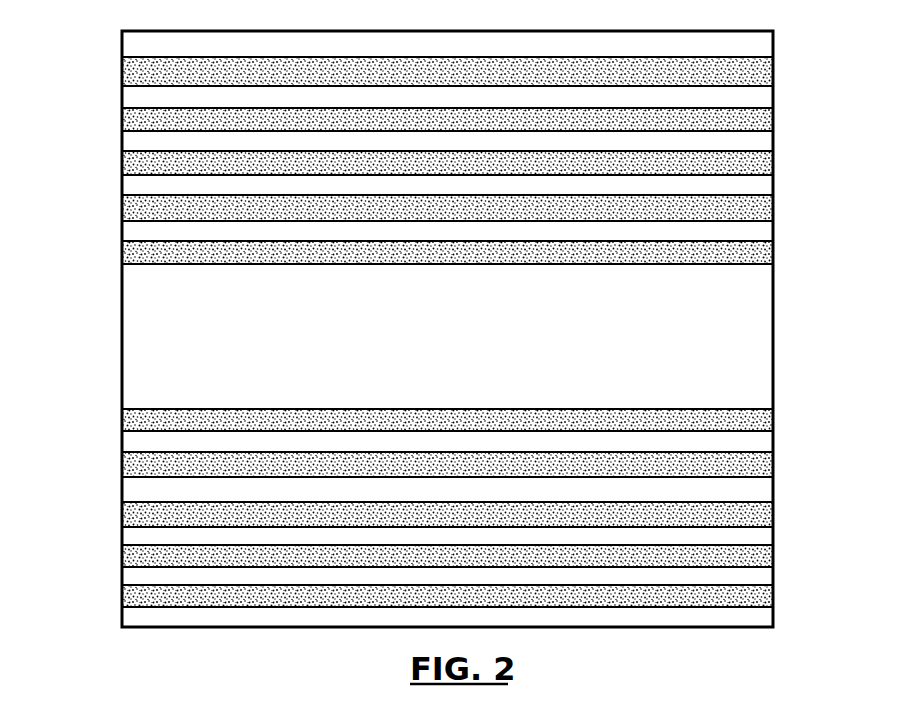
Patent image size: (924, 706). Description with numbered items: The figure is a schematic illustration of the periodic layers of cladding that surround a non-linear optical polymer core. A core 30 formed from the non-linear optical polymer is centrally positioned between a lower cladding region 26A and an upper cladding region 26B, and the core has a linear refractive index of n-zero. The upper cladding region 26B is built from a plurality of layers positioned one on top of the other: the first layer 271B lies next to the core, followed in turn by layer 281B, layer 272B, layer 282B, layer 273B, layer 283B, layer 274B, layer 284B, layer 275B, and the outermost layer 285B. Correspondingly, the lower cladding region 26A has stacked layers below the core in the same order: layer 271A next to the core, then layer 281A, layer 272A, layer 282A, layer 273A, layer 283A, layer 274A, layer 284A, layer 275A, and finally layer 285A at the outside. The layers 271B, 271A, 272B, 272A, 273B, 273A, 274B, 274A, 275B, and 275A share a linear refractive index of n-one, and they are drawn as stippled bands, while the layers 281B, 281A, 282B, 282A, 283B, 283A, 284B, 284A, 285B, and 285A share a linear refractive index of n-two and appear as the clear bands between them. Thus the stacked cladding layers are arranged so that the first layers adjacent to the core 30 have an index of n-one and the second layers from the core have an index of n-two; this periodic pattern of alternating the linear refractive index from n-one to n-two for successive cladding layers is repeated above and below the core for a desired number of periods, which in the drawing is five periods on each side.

The upper cladding layer 275B is at (762, 73).
The upper cladding layer 274B is at (773, 113).
The upper cladding layer 273B is at (773, 155).
The upper cladding layer 272B is at (773, 208).
The upper cladding layer 271B is at (763, 249).
The upper cladding layer 285B is at (122, 43).
The upper cladding layer 284B is at (133, 97).
The upper cladding layer 283B is at (123, 137).
The upper cladding layer 282B is at (133, 180).
The upper cladding layer 281B is at (122, 232).
The upper cladding region 26B is at (201, 257).
The core 30 is at (321, 364).
The lower cladding layer 271A is at (777, 417).
The lower cladding layer 272A is at (773, 459).
The lower cladding layer 273A is at (773, 512).
The lower cladding layer 274A is at (763, 553).
The lower cladding layer 275A is at (763, 593).
The lower cladding layer 281A is at (123, 440).
The lower cladding layer 282A is at (135, 493).
The lower cladding layer 283A is at (123, 535).
The lower cladding layer 284A is at (135, 577).
The lower cladding layer 285A is at (123, 618).
The lower cladding region 26A is at (745, 412).